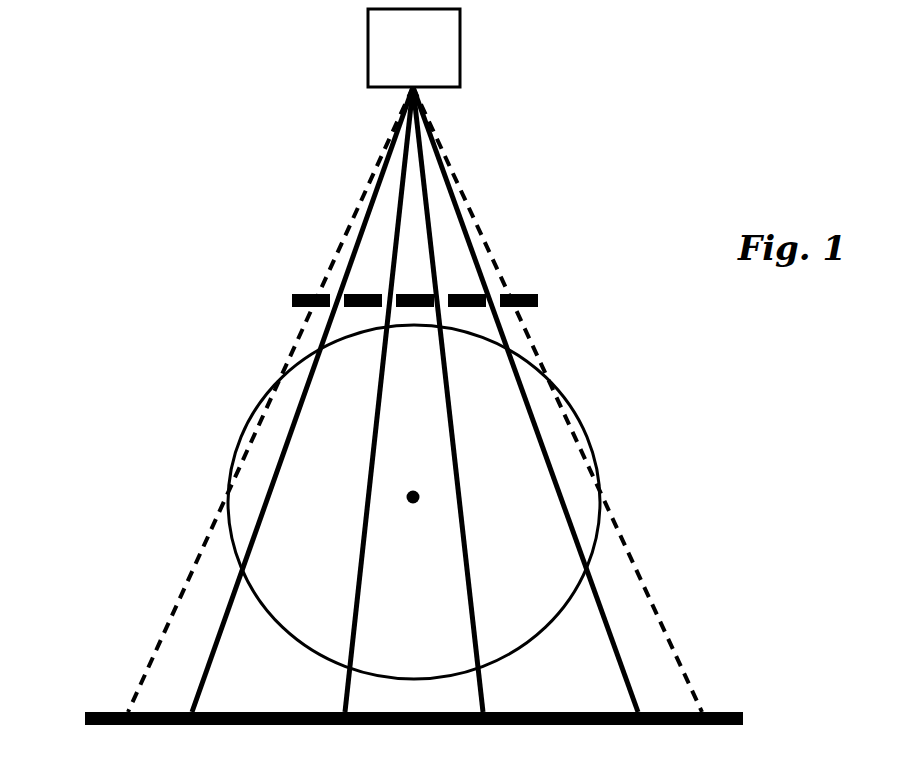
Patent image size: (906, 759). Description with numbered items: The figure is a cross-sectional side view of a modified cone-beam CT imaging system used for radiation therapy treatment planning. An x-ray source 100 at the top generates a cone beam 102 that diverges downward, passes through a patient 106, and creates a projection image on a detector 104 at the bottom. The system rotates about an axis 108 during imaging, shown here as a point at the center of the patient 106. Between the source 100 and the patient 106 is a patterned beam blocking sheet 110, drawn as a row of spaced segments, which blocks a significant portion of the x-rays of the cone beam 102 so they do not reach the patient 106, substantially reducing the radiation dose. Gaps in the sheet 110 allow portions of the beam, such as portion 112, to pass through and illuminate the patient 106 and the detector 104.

The x-ray source 100 is at (368, 48).
The cone beam 102 is at (330, 268).
The detector 104 is at (103, 713).
The patient 106 is at (233, 452).
The axis 108 is at (420, 494).
The patterned beam blocking sheet 110 is at (525, 292).
The portion of the beam 112 is at (620, 655).